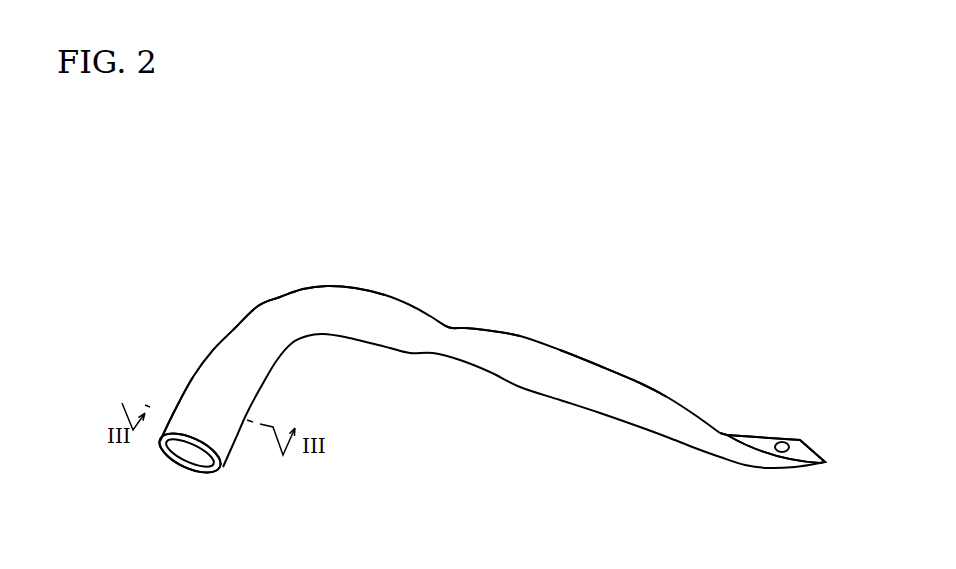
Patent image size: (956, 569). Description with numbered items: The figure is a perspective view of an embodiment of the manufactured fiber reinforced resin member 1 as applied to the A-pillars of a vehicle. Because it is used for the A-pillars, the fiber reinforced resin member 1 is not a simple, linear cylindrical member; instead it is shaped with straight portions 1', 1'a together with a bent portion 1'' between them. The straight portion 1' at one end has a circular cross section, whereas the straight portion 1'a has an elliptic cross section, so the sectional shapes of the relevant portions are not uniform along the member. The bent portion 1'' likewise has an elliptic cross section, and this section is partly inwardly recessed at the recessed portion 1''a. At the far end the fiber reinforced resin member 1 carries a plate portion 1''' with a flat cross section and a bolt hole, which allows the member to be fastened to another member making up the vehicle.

The fiber reinforced resin member 1 is at (489, 326).
The straight portion 1' is at (174, 379).
The bent portion 1'' is at (309, 264).
The plate portion 1''' is at (772, 401).
The partly inwardly recessed portion 1''a is at (482, 278).
The straight portion 1'a is at (613, 336).